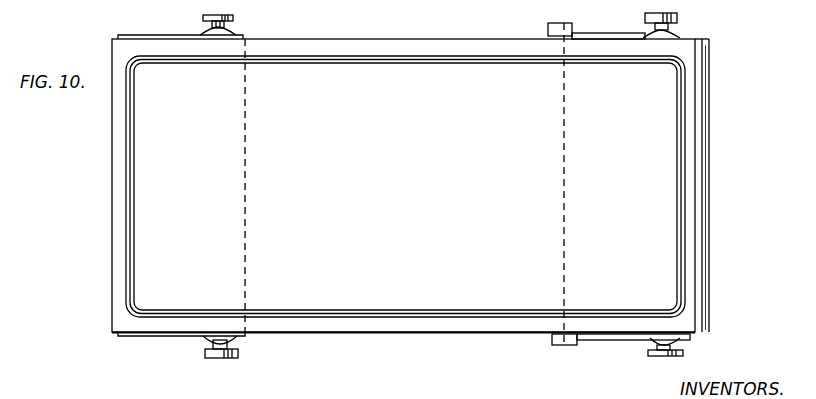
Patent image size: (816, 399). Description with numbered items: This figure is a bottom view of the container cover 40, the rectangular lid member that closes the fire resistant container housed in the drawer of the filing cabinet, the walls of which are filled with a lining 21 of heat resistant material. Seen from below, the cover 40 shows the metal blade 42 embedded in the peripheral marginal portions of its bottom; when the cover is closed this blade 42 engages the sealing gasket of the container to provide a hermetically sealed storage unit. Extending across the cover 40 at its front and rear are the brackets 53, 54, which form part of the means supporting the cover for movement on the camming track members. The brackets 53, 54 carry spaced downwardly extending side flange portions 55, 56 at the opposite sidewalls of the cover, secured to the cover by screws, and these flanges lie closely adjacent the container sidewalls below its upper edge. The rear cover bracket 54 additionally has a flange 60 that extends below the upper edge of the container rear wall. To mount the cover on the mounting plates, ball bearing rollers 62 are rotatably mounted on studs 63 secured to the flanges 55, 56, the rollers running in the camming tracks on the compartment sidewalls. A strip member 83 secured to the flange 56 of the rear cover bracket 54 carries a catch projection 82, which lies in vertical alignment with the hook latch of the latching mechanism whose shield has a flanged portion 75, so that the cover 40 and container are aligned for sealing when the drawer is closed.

The lining 21 is at (284, 0).
The cover 40 is at (353, 349).
The metal blade 42 is at (134, 201).
The bracket 53 is at (240, 230).
The rear cover bracket 54 is at (650, 192).
The side flange portion 55 is at (148, 22).
The side flange portion 56 is at (690, 36).
The flange 60 is at (706, 283).
The ball bearing roller 62 is at (233, 18).
The stud 63 is at (212, 27).
The flanged portion 75 is at (423, 175).
The catch projection 82 is at (550, 26).
The strip member 83 is at (612, 28).